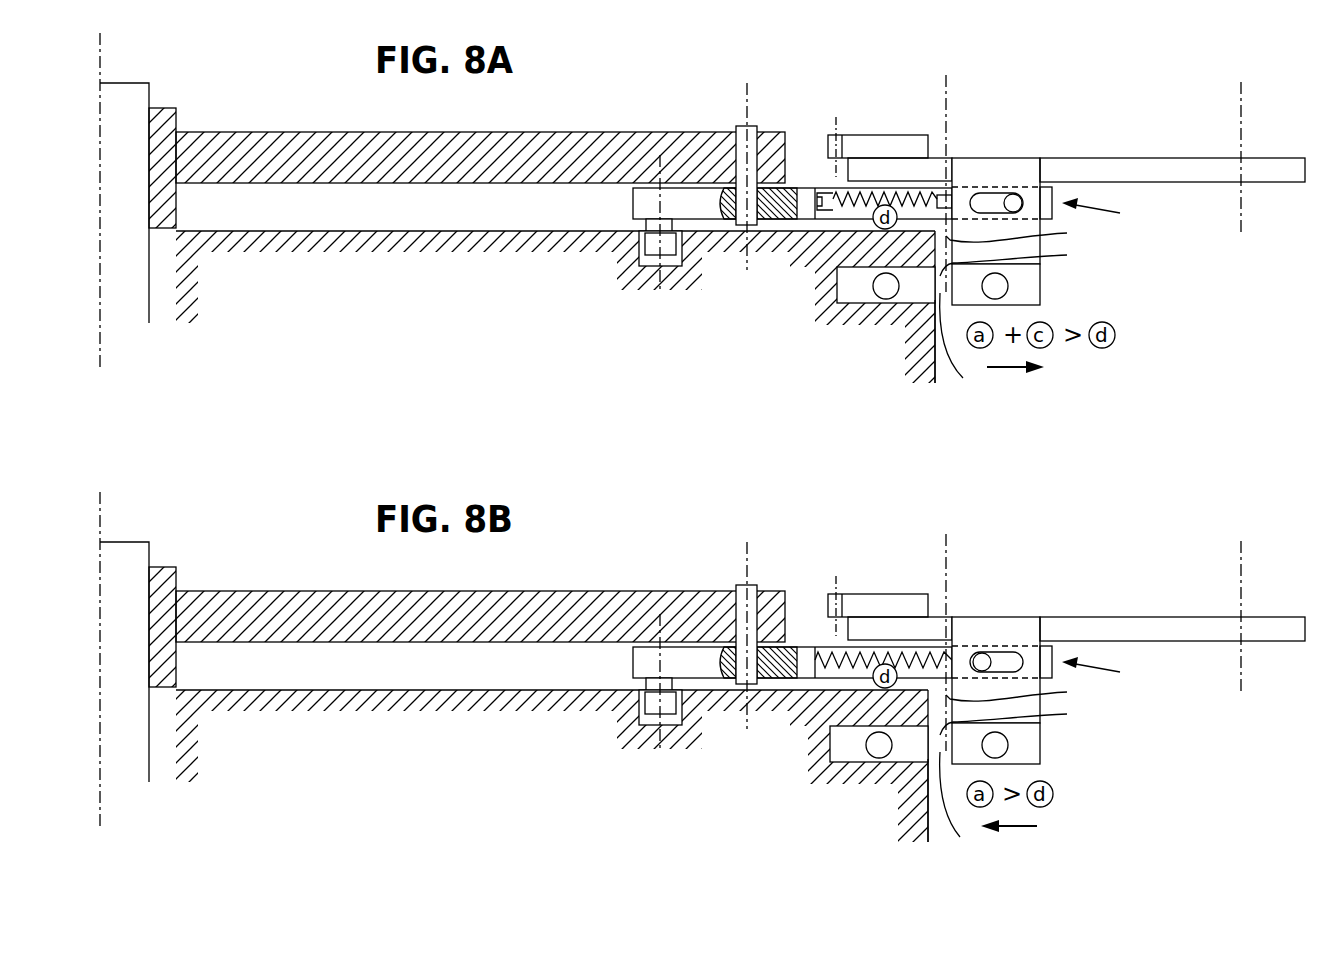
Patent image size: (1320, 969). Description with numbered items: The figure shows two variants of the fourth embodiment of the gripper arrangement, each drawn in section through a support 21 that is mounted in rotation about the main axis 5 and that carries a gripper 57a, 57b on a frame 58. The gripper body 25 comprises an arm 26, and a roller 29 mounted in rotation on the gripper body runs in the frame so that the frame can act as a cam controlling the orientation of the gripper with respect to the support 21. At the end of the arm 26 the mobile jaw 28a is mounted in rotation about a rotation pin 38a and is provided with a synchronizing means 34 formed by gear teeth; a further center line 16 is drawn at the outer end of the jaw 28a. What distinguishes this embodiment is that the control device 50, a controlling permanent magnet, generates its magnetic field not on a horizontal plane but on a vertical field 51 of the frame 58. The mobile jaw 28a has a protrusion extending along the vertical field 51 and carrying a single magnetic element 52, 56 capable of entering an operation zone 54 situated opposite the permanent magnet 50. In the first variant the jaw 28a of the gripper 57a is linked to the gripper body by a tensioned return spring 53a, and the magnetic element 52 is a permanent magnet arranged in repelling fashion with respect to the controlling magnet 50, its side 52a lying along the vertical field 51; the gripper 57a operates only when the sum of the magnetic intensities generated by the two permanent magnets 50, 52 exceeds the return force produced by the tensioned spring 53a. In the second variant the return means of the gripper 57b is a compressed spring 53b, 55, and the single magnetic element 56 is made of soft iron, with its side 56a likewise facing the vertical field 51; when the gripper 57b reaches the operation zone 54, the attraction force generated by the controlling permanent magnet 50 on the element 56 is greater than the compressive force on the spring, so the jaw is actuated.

In FIG. 8A, the main axis 5 is at (103, 56).
In FIG. 8B, the main axis 5 is at (122, 657).
In FIG. 8A, the support 21 is at (265, 148).
In FIG. 8B, the support 21 is at (480, 593).
In FIG. 8A, the frame 58 is at (453, 309).
In FIG. 8B, the frame 58 is at (514, 692).
In FIG. 8A, the roller 29 is at (653, 247).
In FIG. 8B, the roller 29 is at (619, 682).
In FIG. 8A, the arm 26 is at (805, 211).
In FIG. 8B, the arm 26 is at (792, 703).
In FIG. 8A, the tensioned return spring 53a is at (843, 193).
In FIG. 8B, the compressed return spring 53b is at (870, 607).
In FIG. 8A, the synchronizing means 34 is at (866, 146).
In FIG. 8B, the synchronizing means 34 is at (890, 593).
In FIG. 8A, the rotation pin 38a is at (949, 96).
In FIG. 8B, the rotation pin 38a is at (983, 641).
In FIG. 8A, the gripper 57a is at (1036, 140).
In FIG. 8B, the gripper 57b is at (1025, 617).
In FIG. 8A, the mobile jaw 28a is at (1153, 166).
In FIG. 8B, the mobile jaw 28a is at (1172, 603).
In FIG. 8A, the center line 16 is at (1244, 107).
In FIG. 8B, the center line 16 is at (1270, 615).
In FIG. 8A, the gripper body 25 is at (1109, 213).
In FIG. 8B, the gripper body 25 is at (1109, 672).
In FIG. 8A, the compressed spring 55 is at (1024, 234).
In FIG. 8B, the compressed spring 55 is at (1024, 693).
In FIG. 8A, the operation zone 54 is at (1021, 259).
In FIG. 8B, the operation zone 54 is at (1021, 718).
In FIG. 8A, the magnetic element 52 is at (1037, 283).
In FIG. 8A, the control device 50 is at (868, 302).
In FIG. 8B, the control device 50 is at (874, 782).
In FIG. 8A, the vertical field 51 is at (937, 363).
In FIG. 8B, the vertical field 51 is at (947, 827).
In FIG. 8A, the magnet side face 52a is at (978, 347).
In FIG. 8B, the magnetic element 56 is at (1034, 747).
In FIG. 8B, the magnetic body side face 56a is at (969, 805).